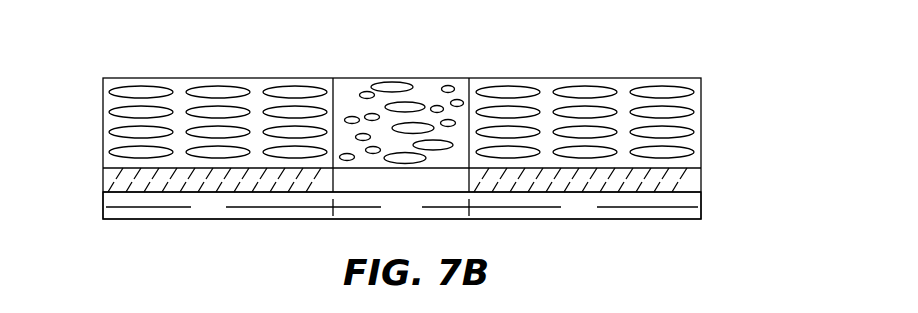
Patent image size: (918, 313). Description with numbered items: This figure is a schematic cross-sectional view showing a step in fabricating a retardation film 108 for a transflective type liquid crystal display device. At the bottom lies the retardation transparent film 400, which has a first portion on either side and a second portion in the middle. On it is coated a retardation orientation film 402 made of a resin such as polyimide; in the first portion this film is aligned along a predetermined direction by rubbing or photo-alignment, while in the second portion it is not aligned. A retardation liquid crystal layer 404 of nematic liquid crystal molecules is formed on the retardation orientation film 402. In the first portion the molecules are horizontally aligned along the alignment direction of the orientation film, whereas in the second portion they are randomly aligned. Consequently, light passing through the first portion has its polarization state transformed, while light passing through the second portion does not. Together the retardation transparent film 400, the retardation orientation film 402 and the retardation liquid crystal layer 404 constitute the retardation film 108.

The retardation film 108 is at (98, 78).
The retardation transparent film 400 is at (690, 213).
The retardation orientation film 402 is at (690, 188).
The retardation liquid crystal layer 404 is at (692, 125).